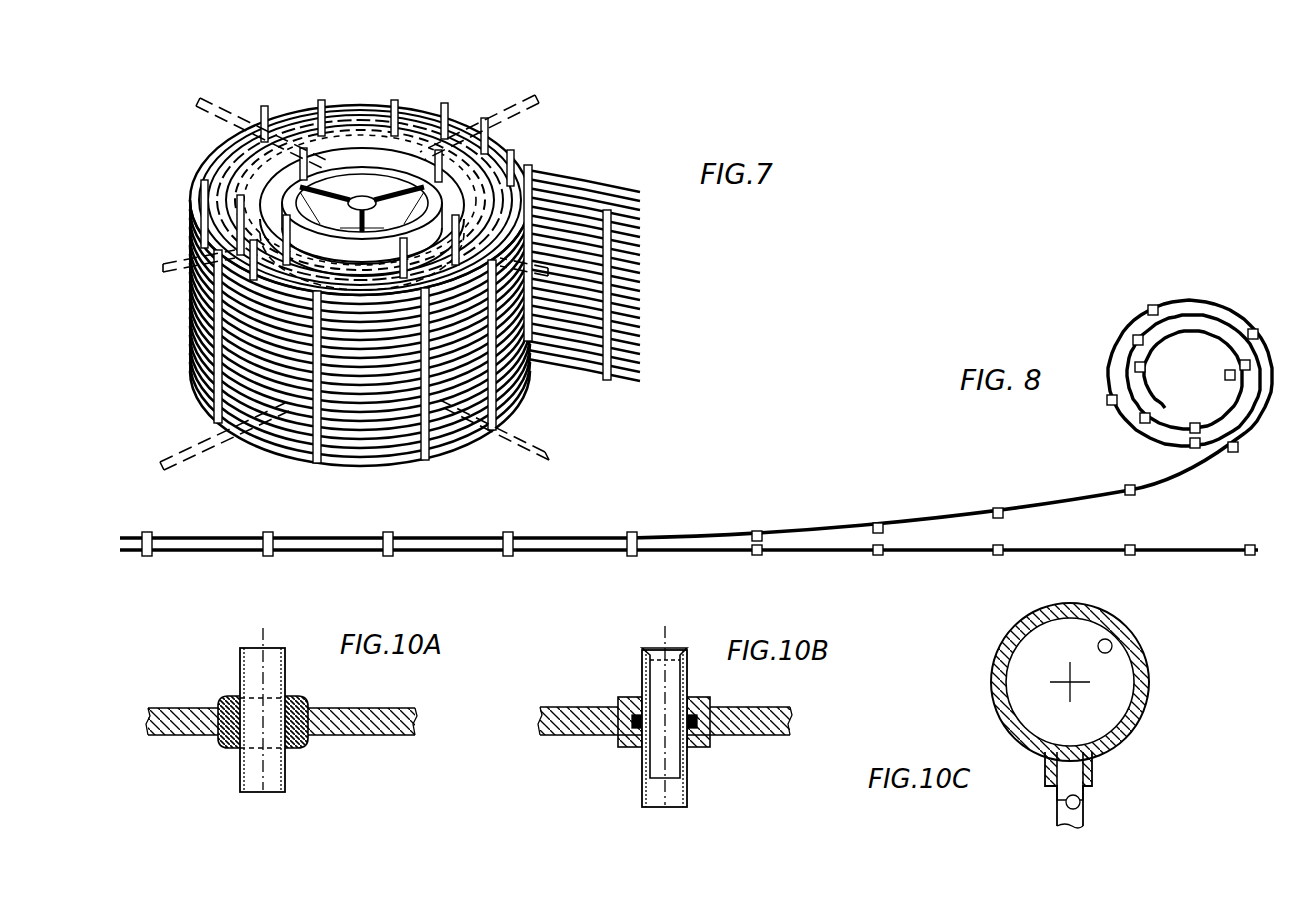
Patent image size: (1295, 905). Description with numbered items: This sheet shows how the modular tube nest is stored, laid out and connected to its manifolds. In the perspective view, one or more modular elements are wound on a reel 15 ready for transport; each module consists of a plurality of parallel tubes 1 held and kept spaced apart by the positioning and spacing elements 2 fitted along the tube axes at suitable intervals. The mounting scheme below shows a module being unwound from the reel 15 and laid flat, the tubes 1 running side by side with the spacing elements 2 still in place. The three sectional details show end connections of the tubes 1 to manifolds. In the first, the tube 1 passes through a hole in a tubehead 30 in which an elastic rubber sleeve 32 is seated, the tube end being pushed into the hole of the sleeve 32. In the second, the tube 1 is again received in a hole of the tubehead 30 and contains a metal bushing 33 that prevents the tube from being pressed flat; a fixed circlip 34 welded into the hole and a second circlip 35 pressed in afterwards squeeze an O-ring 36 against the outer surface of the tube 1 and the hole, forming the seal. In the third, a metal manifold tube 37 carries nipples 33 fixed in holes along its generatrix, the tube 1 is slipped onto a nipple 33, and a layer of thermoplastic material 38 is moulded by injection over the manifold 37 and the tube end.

In FIG. 7, the tubes 1 is at (668, 262).
In FIG. 8, the tubes 1 is at (322, 535).
In FIG. 10A, the tubes 1 is at (240, 776).
In FIG. 10B, the tubes 1 is at (642, 797).
In FIG. 10C, the tubes 1 is at (1055, 815).
In FIG. 7, the positioning and spacing elements 2 is at (532, 165).
In FIG. 8, the positioning and spacing elements 2 is at (150, 532).
In FIG. 7, the reel 15 is at (525, 112).
In FIG. 8, the reel 15 is at (1227, 312).
In FIG. 10A, the tubehead 30 is at (185, 708).
In FIG. 10B, the tubehead 30 is at (572, 707).
In FIG. 10A, the sleeves 32 is at (298, 700).
In FIG. 10B, the metal bushing 33 is at (655, 665).
In FIG. 10C, the metal bushing 33 is at (1082, 806).
In FIG. 10B, the fixed circlip 34 is at (697, 747).
In FIG. 10B, the second circlip 35 is at (700, 698).
In FIG. 10B, the O-ring 36 is at (632, 721).
In FIG. 10C, the metal tube manifold element 37 is at (1112, 640).
In FIG. 10C, the layer of thermoplastic material 38 is at (1148, 708).